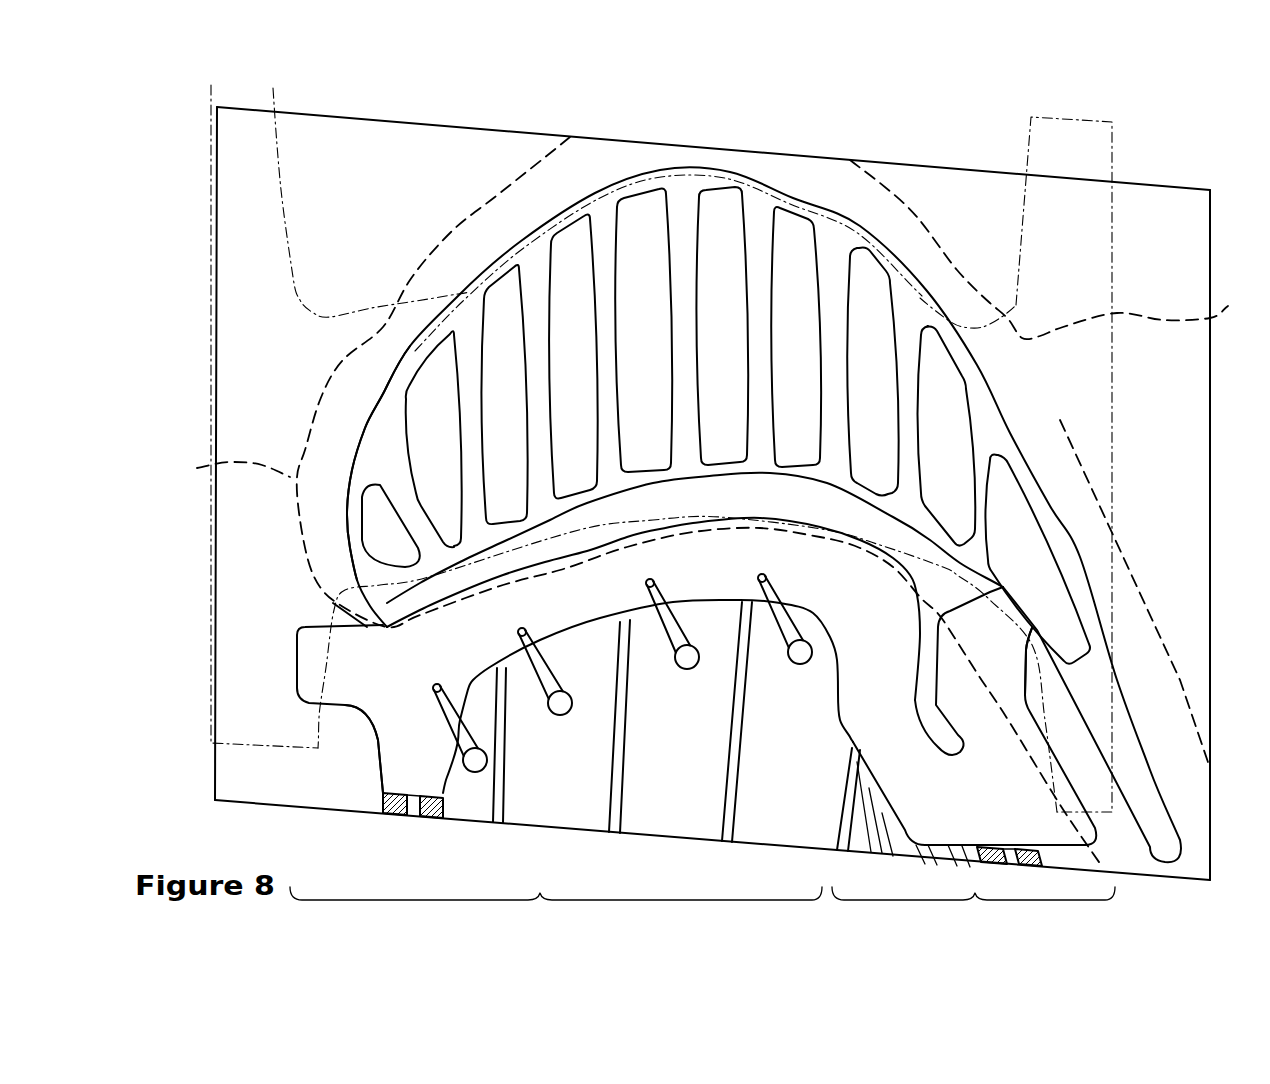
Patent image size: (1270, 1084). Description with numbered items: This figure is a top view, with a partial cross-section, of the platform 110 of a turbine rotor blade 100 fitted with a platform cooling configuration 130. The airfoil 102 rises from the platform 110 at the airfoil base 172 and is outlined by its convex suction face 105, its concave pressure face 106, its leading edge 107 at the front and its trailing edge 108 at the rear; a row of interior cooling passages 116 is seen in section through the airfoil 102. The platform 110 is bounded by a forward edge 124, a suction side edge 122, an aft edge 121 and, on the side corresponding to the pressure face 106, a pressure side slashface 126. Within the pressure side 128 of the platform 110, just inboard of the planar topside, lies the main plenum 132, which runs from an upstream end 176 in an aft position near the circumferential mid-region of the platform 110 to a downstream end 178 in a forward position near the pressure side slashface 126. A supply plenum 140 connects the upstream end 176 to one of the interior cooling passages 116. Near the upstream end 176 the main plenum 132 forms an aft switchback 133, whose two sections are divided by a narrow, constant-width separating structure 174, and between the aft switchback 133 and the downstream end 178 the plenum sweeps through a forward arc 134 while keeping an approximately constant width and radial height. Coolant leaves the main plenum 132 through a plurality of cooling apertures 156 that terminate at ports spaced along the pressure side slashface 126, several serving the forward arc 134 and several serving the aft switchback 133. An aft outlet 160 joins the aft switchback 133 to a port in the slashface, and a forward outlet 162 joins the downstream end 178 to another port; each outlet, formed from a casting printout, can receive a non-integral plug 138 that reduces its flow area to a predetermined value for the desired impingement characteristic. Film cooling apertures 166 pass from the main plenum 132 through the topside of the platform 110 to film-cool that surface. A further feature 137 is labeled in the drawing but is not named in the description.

The turbine rotor blade 100 is at (947, 140).
The airfoil 102 is at (931, 321).
The convex suction face 105 is at (433, 322).
The concave pressure face 106 is at (520, 567).
The leading edge 107 is at (333, 605).
The trailing edge 108 is at (1208, 860).
The platform 110 is at (1182, 366).
The interior cooling passage 116 is at (667, 342).
The aft edge 121 is at (1213, 523).
The suction side edge 122 is at (445, 126).
The forward edge 124 is at (217, 139).
The pressure side slashface 126 is at (265, 805).
The pressure side 128 is at (706, 754).
The platform cooling configuration 130 is at (272, 772).
The main plenum 132 is at (734, 579).
The aft switchback 133 is at (1004, 821).
The forward arc 134 is at (604, 609).
The forward wall 137 is at (429, 730).
The non-integral plug 138 is at (385, 814).
The supply plenum 140 is at (1009, 647).
The cooling apertures 156 is at (506, 800).
The aft outlet 160 is at (1003, 860).
The forward outlet 162 is at (412, 814).
The film cooling apertures 166 is at (540, 662).
The airfoil base 172 is at (709, 501).
The separating structure 174 is at (918, 635).
The upstream end 176 is at (977, 694).
The downstream end 178 is at (434, 769).